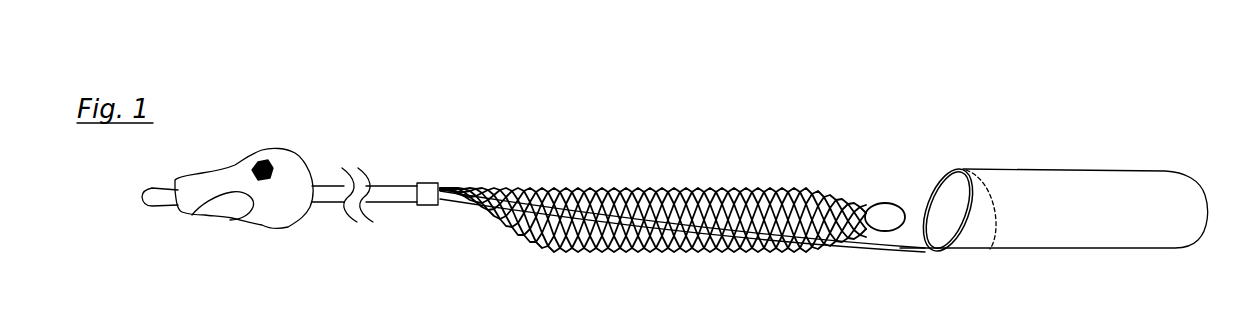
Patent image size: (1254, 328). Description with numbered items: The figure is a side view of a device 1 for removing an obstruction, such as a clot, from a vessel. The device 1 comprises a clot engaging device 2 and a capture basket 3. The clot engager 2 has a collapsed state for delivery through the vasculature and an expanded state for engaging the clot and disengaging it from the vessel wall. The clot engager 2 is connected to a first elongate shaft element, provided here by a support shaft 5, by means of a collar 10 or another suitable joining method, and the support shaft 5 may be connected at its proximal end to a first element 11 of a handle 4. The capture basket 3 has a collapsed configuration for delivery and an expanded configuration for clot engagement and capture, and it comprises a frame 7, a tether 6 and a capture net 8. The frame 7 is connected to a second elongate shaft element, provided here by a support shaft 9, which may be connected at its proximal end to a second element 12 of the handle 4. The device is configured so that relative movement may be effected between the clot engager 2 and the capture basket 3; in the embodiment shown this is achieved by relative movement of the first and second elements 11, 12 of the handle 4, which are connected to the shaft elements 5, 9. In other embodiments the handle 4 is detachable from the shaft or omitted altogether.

The device 1 is at (688, 100).
The clot engaging device 2 is at (579, 164).
The capture basket 3 is at (942, 142).
The handle 4 is at (251, 132).
The support shaft 5 is at (397, 186).
The tether 6 is at (958, 255).
The frame 7 is at (967, 170).
The capture net 8 is at (1078, 245).
The support shaft 9 is at (900, 253).
The collar 10 is at (427, 210).
The first element 11 is at (292, 225).
The second element 12 is at (160, 201).